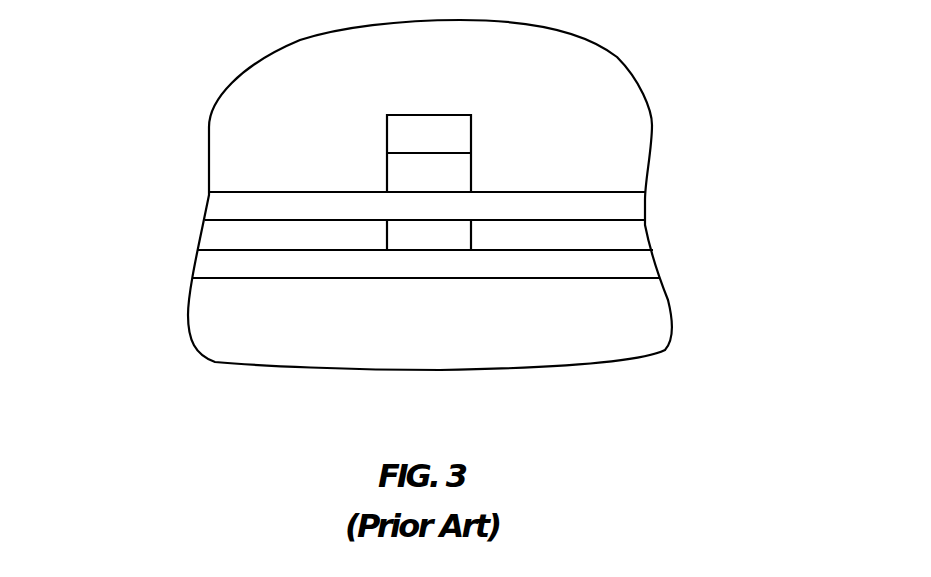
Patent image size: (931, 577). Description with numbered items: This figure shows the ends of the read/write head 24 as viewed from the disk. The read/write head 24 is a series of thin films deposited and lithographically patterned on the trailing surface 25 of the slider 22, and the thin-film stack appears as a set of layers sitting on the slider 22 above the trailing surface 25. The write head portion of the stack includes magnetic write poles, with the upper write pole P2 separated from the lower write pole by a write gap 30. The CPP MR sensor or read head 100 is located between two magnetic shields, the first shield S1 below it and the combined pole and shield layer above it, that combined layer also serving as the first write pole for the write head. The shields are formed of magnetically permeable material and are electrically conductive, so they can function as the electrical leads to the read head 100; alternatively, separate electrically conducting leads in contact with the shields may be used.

The slider 22 is at (228, 353).
The read/write head 24 is at (137, 113).
The trailing surface 25 is at (204, 278).
The magnetic shield S1 is at (276, 272).
The magnetic write pole P2 is at (463, 135).
The write gap 30 is at (463, 174).
The CPP MR sensor or read head 100 is at (457, 238).